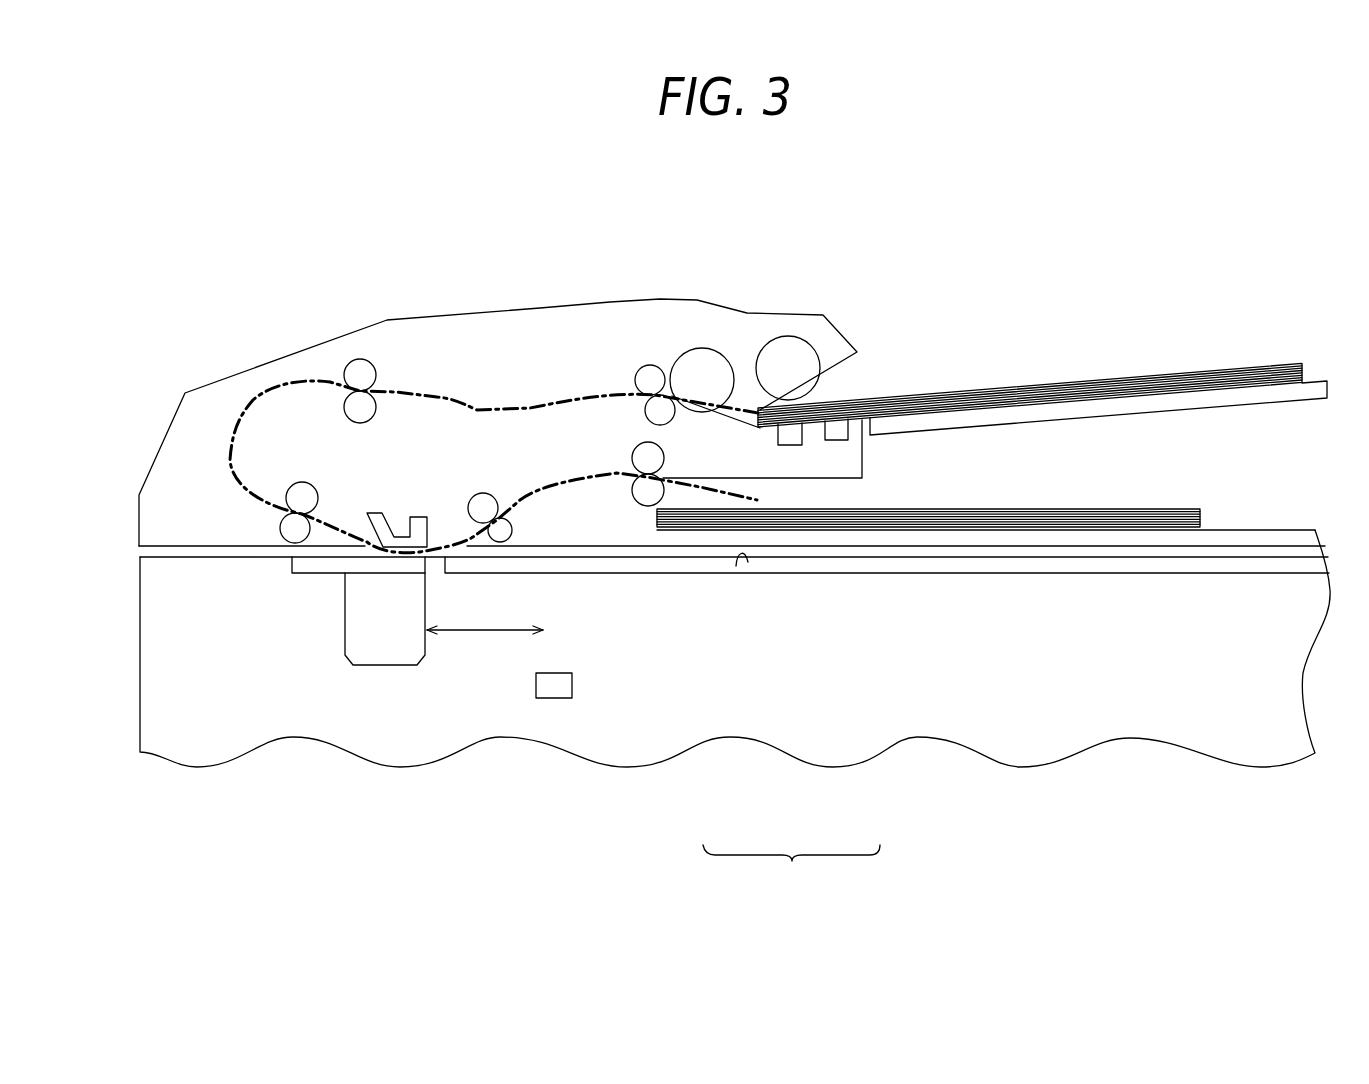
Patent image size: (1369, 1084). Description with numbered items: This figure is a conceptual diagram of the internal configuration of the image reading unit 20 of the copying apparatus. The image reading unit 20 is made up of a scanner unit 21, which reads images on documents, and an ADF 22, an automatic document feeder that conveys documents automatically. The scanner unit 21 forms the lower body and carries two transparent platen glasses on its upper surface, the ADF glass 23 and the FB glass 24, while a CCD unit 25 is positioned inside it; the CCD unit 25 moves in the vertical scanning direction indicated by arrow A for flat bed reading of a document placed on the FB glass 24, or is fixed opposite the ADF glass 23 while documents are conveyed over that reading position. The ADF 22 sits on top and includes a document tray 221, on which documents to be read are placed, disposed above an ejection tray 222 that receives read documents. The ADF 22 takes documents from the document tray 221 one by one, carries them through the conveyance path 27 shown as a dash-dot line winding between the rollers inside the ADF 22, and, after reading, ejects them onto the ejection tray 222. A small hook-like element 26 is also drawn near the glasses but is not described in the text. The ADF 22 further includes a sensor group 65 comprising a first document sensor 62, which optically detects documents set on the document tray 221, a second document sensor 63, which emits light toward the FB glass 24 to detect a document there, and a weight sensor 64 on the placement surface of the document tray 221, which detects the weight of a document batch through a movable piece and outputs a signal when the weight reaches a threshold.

The image reading unit 20 is at (426, 202).
The scanner unit 21 is at (162, 637).
The ADF 22 is at (282, 358).
The platen glass (ADF glass) 23 is at (313, 563).
The platen glass (FB glass) 24 is at (623, 565).
The CCD unit 25 is at (385, 657).
The hook 26 is at (748, 562).
The conveyance path 27 is at (431, 392).
The first document sensor 62 is at (790, 445).
The second document sensor 63 is at (563, 687).
The weight sensor 64 is at (837, 440).
The sensor group 65 is at (791, 870).
The document tray 221 is at (1127, 390).
The ejection tray 222 is at (1012, 525).